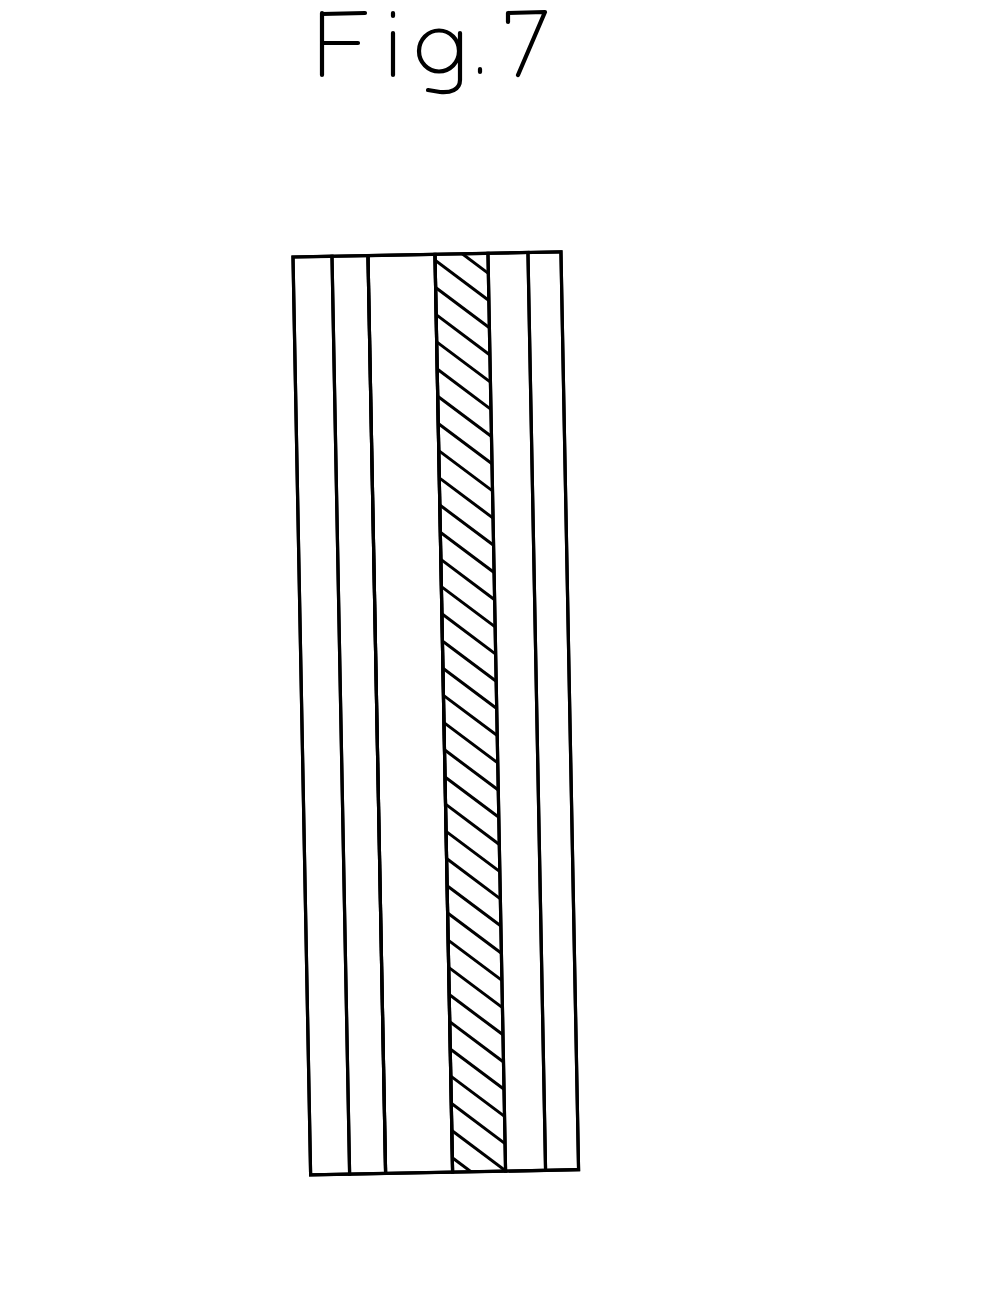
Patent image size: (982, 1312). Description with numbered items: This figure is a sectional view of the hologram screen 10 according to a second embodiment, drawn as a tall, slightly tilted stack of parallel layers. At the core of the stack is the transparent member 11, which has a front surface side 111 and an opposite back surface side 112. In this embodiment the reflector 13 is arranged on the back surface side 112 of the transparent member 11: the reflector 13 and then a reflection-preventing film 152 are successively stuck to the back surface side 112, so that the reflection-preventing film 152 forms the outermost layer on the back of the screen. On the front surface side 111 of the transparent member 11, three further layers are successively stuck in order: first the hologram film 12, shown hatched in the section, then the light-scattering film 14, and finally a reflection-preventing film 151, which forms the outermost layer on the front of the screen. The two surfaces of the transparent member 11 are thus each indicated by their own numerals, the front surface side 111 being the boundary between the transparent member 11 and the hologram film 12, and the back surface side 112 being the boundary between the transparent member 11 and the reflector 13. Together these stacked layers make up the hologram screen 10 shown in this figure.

The hologram screen 10 is at (233, 1075).
The transparent member 11 is at (394, 852).
The front surface side 111 is at (443, 717).
The back surface side 112 is at (374, 635).
The hologram film 12 is at (470, 300).
The reflector 13 is at (350, 281).
The light-scattering film 14 is at (525, 1132).
The reflection-preventing film 151 is at (550, 378).
The reflection-preventing film 152 is at (308, 523).